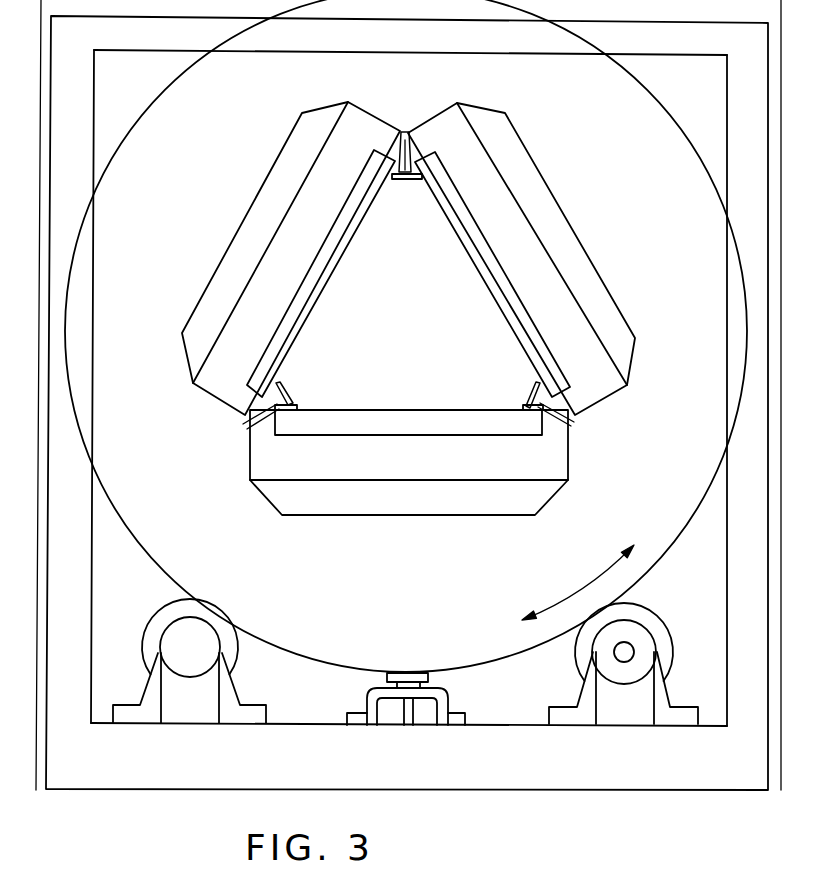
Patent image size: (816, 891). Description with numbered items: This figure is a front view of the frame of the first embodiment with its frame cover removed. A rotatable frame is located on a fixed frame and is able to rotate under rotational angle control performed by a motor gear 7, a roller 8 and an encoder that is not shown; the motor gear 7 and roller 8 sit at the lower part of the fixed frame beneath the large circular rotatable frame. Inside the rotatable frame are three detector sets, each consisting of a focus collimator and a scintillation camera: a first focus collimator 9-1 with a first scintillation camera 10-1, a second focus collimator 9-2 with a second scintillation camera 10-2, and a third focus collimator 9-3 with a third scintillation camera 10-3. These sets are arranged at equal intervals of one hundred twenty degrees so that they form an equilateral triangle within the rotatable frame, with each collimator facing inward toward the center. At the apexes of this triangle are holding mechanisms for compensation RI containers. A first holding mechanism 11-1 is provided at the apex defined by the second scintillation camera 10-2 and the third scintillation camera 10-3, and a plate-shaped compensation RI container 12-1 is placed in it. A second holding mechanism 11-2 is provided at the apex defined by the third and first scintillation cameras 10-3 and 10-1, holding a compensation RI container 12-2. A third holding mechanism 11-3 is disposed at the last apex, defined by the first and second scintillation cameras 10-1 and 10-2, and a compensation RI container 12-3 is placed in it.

The motor gear 7 is at (650, 625).
The roller 8 is at (168, 640).
The first focus collimator 9-1 is at (478, 237).
The second focus collimator 9-2 is at (394, 430).
The third focus collimator 9-3 is at (305, 287).
The first scintillation camera 10-1 is at (540, 268).
The second scintillation camera 10-2 is at (375, 473).
The third scintillation camera 10-3 is at (282, 230).
The first holding mechanism 11-1 is at (298, 405).
The second holding mechanism 11-2 is at (399, 180).
The third holding mechanism 11-3 is at (525, 407).
The compensation RI container 12-1 is at (247, 418).
The compensation RI container 12-2 is at (404, 132).
The compensation RI container 12-3 is at (553, 412).